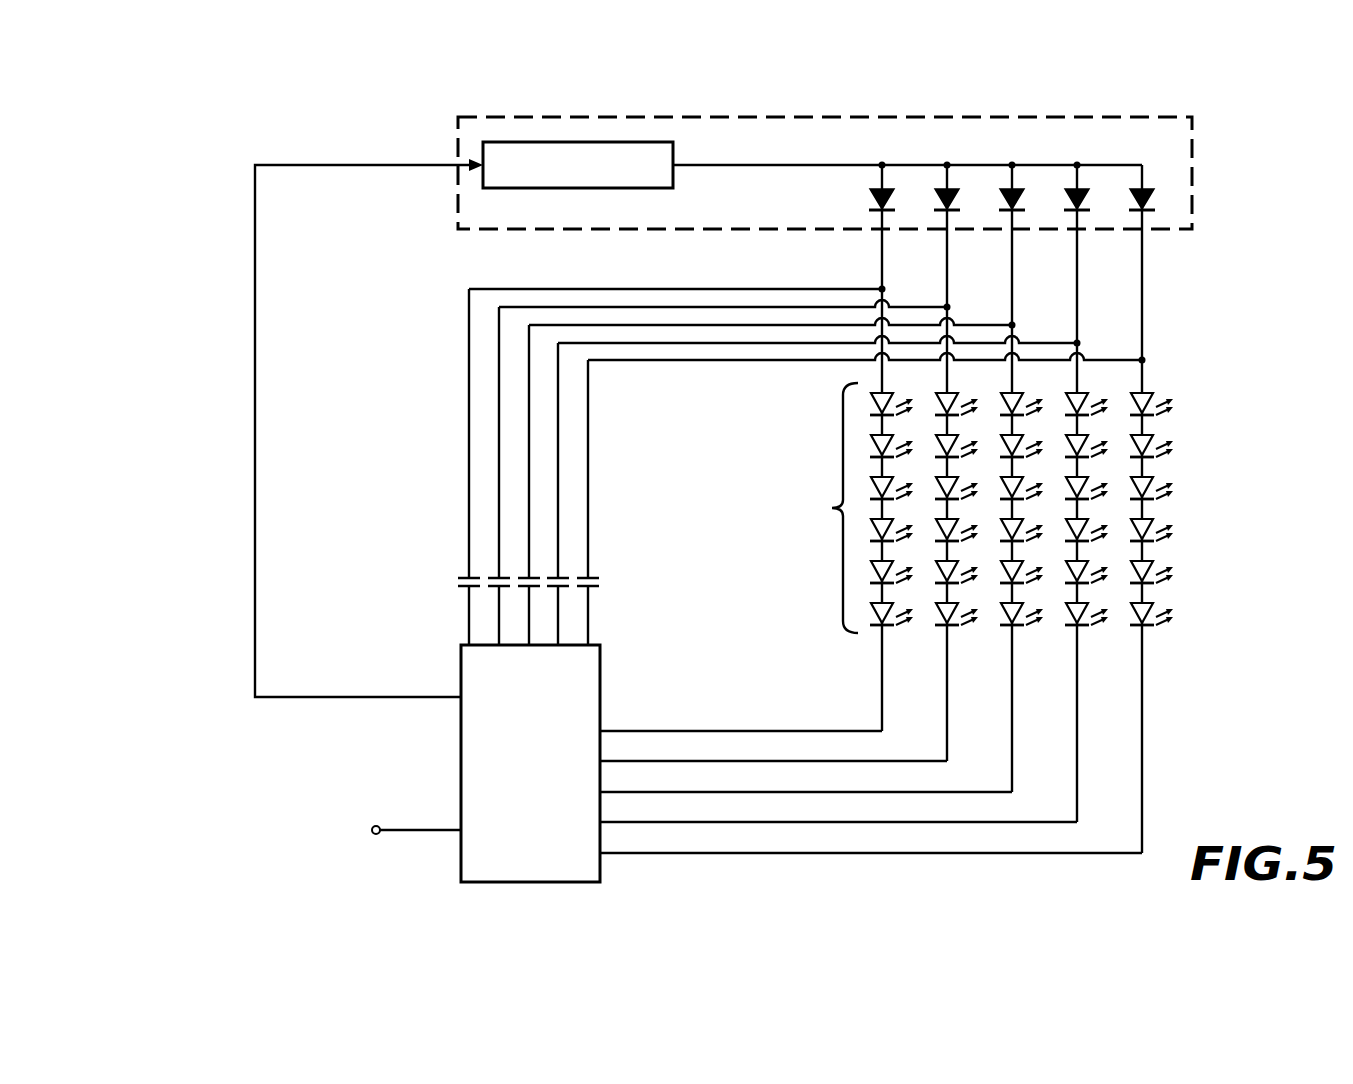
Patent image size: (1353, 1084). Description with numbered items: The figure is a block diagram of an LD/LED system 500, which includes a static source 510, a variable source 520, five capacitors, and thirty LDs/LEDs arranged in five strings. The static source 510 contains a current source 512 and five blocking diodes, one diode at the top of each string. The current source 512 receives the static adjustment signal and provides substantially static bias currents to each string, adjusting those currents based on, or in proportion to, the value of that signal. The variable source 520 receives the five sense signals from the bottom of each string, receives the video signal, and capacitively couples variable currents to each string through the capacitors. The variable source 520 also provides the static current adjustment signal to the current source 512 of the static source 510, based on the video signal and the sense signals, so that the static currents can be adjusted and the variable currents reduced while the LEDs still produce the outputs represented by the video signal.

The LD/LED system 500 is at (1268, 169).
The static source 510 is at (513, 230).
The current source 512 is at (542, 189).
The variable source 520 is at (461, 769).